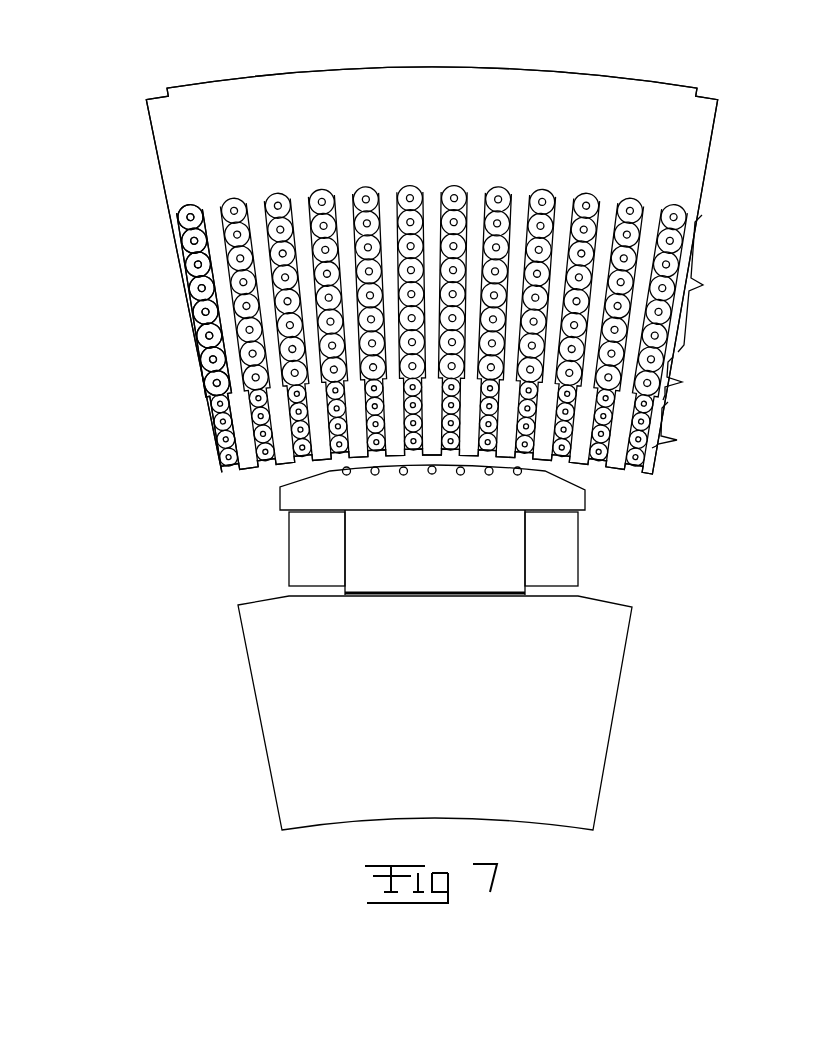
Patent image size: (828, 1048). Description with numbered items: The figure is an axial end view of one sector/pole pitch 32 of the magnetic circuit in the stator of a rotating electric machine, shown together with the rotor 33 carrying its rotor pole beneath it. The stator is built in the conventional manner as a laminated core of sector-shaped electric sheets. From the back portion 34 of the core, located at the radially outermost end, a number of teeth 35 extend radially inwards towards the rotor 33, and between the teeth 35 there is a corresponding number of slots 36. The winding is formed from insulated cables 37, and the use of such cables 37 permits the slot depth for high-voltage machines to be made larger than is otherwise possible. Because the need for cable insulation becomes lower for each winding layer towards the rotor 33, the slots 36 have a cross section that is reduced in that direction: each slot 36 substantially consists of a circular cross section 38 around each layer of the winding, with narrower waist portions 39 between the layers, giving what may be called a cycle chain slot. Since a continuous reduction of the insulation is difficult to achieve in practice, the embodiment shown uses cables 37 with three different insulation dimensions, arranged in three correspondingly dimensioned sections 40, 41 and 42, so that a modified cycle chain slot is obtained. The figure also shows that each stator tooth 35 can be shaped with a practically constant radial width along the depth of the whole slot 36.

The sector/pole pitch 32 is at (443, 92).
The rotor 33 is at (275, 714).
The back portion 34 is at (132, 180).
The teeth 35 is at (283, 432).
The slots 36 is at (250, 320).
The cables 37 is at (203, 365).
The circular cross section 38 is at (176, 243).
The waist portions 39 is at (207, 376).
The first section 40 is at (707, 283).
The second section 41 is at (690, 378).
The third section 42 is at (682, 429).